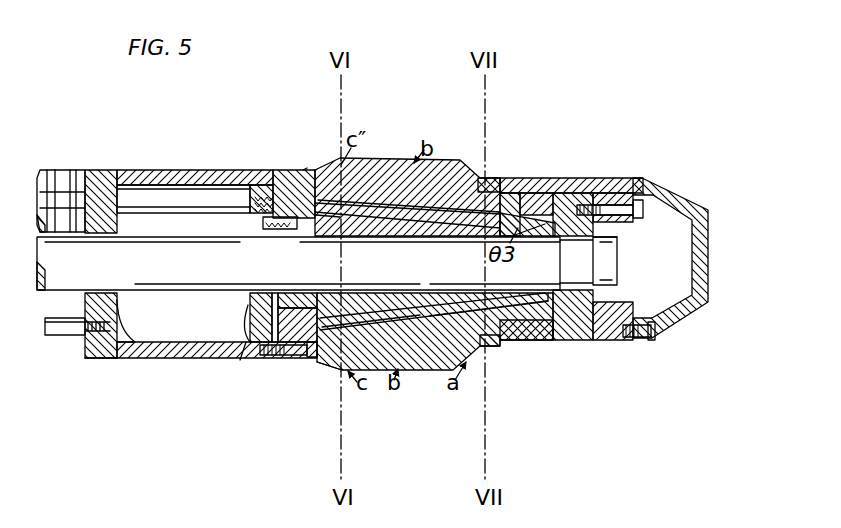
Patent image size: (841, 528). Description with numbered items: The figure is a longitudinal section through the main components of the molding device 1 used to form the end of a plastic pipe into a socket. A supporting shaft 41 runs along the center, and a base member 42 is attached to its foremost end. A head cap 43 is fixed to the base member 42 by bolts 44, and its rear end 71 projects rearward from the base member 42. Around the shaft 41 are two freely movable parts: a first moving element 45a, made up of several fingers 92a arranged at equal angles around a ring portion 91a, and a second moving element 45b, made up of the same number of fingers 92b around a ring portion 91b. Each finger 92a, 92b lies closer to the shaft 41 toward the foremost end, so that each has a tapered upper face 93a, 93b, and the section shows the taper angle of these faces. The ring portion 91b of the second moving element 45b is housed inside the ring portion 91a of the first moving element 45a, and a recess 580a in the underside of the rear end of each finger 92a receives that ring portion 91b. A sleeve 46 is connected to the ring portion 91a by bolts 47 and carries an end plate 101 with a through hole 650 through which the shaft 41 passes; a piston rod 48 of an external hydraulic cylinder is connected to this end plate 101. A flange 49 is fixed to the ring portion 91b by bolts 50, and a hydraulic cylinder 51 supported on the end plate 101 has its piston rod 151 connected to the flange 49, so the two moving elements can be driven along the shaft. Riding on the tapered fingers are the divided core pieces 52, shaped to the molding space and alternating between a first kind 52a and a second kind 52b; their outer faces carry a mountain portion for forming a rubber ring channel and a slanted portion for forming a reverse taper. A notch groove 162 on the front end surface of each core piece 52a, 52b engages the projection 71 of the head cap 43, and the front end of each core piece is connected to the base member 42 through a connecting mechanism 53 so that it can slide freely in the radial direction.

The chuck assembly 1 is at (336, 378).
The supporting shaft 41 is at (181, 245).
The base member 42 is at (552, 198).
The head cap 43 is at (615, 180).
The bolts 44 is at (648, 200).
The first moving element 45a is at (352, 424).
The second moving element 45b is at (414, 97).
The sleeve 46 is at (195, 352).
The bolts 47 is at (323, 357).
The piston rod 48 is at (66, 336).
The flange 49 is at (255, 190).
The bolts 50 is at (300, 182).
The hydraulic cylinder 51 is at (46, 172).
The divided core pieces 52 is at (486, 178).
The first kind of divided core pieces 52a is at (485, 348).
The second kind of divided core pieces 52b is at (503, 200).
The connecting mechanism 53 is at (512, 334).
The rear end of head cap 71 is at (512, 185).
The ring portion 91a is at (305, 167).
The ring portion 91b is at (357, 163).
The fingers 92a is at (415, 308).
The fingers 92b is at (393, 162).
The tapered upper face 93a is at (430, 365).
The tapered upper face 93b is at (489, 206).
The end plate 101 is at (98, 359).
The piston rod 151 is at (144, 196).
The notch groove 162 is at (542, 176).
The recess 580a is at (274, 345).
The through hole 650 is at (136, 343).